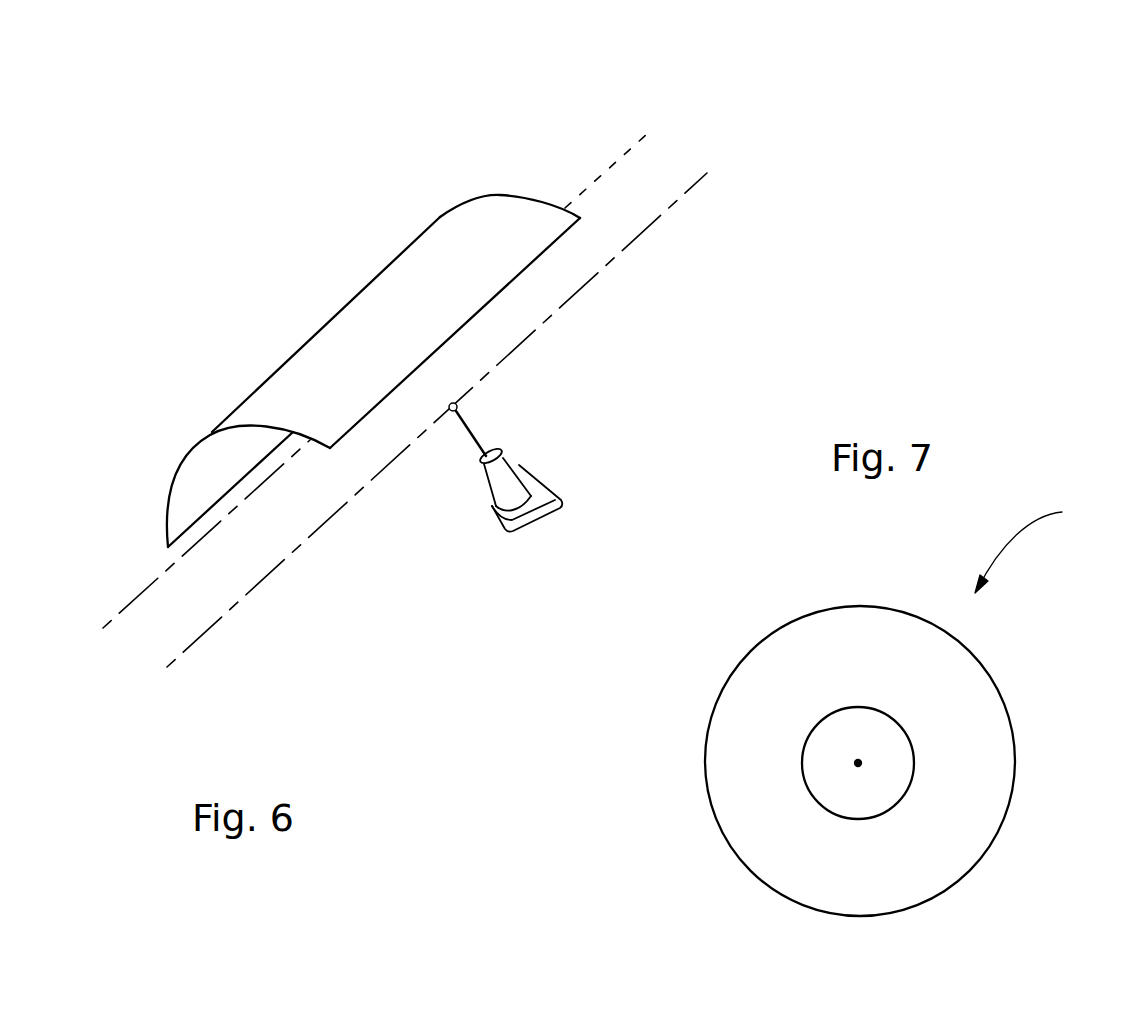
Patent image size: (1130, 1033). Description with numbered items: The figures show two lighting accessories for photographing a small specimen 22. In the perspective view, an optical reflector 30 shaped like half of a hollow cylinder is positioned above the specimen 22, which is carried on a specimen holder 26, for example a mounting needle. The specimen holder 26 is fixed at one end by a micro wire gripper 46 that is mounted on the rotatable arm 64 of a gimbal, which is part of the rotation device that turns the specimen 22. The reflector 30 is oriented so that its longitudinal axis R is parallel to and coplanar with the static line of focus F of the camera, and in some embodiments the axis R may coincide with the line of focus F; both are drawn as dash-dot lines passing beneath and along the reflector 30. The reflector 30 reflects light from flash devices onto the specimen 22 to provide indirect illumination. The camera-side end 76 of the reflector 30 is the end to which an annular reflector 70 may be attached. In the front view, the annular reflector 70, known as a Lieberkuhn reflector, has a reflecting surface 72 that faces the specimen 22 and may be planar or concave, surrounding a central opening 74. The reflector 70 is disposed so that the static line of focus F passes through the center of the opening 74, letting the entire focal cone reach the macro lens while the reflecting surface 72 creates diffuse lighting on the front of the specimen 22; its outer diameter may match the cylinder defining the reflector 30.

In FIG. 6, the specimen 22 is at (452, 403).
In FIG. 6, the specimen holder 26 is at (478, 442).
In FIG. 6, the optical reflector 30 is at (265, 382).
In FIG. 6, the micro wire gripper 46 is at (503, 492).
In FIG. 6, the arm 64 is at (543, 505).
In FIG. 7, the annular reflector 70 is at (1034, 546).
In FIG. 7, the reflecting surface 72 is at (980, 710).
In FIG. 7, the opening 74 is at (880, 797).
In FIG. 6, the camera-side end 76 is at (534, 196).
In FIG. 6, the longitudinal axis R is at (138, 592).
In FIG. 6, the static line of focus F is at (205, 635).
In FIG. 7, the static line of focus F is at (858, 757).